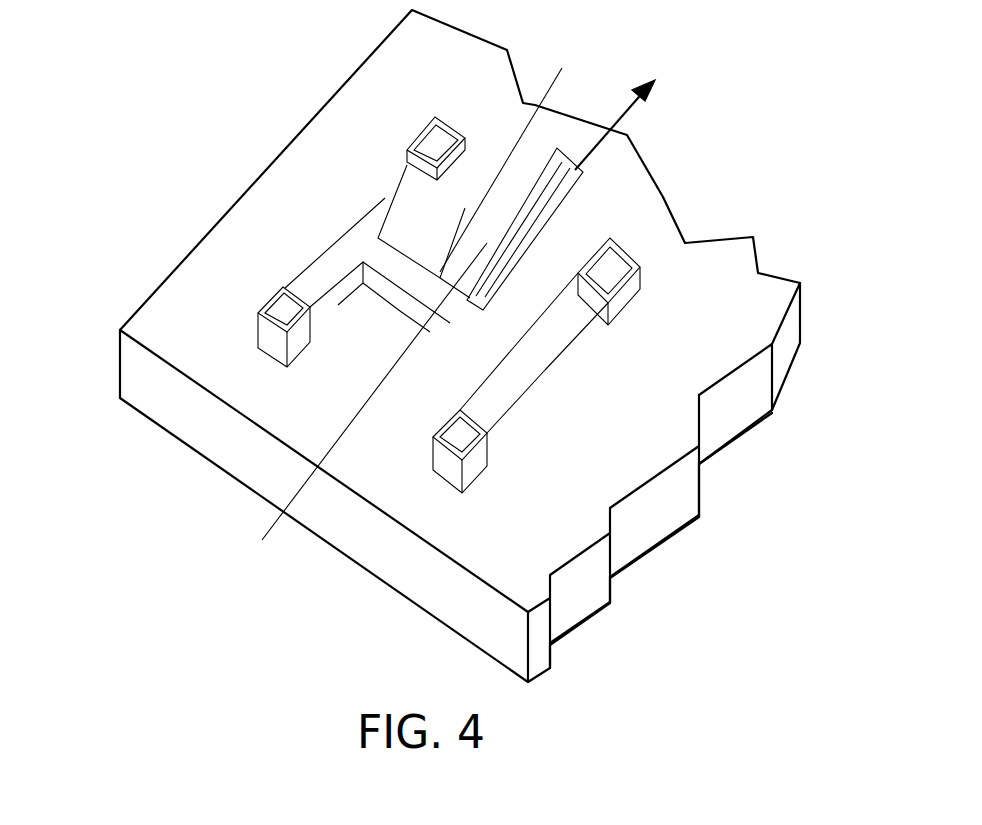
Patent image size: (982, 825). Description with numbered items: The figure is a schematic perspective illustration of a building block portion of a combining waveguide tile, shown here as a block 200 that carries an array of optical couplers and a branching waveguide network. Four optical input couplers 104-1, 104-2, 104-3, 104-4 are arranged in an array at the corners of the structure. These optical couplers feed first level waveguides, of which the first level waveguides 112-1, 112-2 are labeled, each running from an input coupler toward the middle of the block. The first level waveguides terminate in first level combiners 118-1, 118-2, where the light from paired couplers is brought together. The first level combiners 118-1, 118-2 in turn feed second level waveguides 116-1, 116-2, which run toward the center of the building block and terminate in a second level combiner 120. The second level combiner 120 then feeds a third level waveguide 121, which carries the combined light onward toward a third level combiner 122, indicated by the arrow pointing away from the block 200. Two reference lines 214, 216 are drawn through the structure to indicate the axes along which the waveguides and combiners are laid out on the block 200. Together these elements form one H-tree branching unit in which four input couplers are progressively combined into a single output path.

The substrate block 200 is at (183, 420).
The optical input coupler 104-1 is at (420, 145).
The optical input coupler 104-2 is at (612, 237).
The optical input coupler 104-3 is at (268, 308).
The optical input coupler 104-4 is at (440, 418).
The first level waveguide 112-1 is at (382, 213).
The first level waveguide 112-2 is at (330, 263).
The second level waveguide 116-1 is at (392, 272).
The second level waveguide 116-2 is at (487, 338).
The first level combiner 118-1 is at (355, 240).
The first level combiner 118-2 is at (540, 362).
The second level combiner 120 is at (447, 300).
The third level waveguide 121 is at (540, 178).
The third level combiner 122 is at (639, 111).
The first axis line 214 is at (362, 406).
The second axis line 216 is at (514, 158).